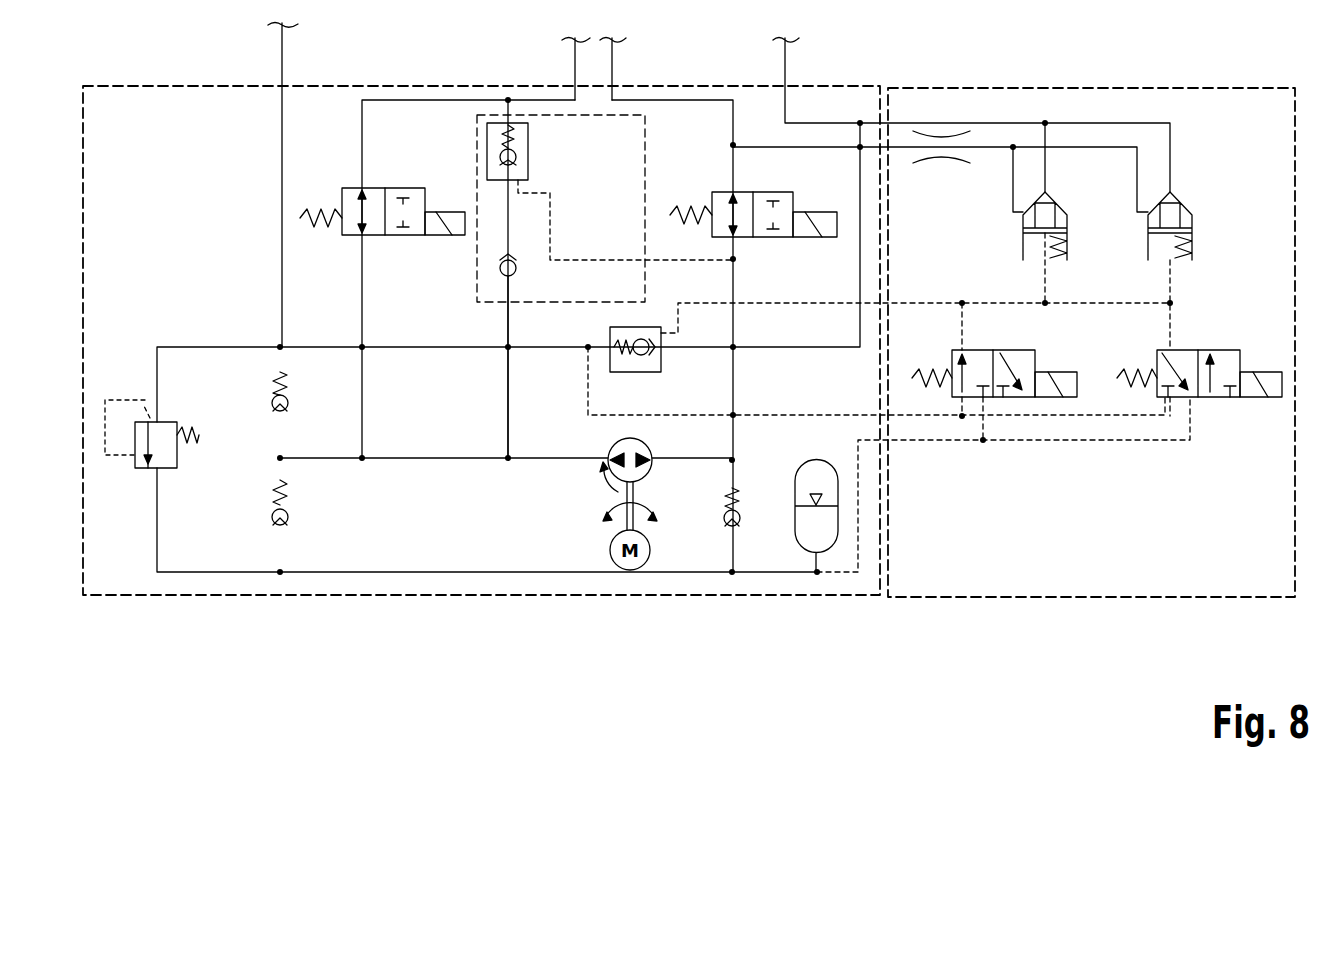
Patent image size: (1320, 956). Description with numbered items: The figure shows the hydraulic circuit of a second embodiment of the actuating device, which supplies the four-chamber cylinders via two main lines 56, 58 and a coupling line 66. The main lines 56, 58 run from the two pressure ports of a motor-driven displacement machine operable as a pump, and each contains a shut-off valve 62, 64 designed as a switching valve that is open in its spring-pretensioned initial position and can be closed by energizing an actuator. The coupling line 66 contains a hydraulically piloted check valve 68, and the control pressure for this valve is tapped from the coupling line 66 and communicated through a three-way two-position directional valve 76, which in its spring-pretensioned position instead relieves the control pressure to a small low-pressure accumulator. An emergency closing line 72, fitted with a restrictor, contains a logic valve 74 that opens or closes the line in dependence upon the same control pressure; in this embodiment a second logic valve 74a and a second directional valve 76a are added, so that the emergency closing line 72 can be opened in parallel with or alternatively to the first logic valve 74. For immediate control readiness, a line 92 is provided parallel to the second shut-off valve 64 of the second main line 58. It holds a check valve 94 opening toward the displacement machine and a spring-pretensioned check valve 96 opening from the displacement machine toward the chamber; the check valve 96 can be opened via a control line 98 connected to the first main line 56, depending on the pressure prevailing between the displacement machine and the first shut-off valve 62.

The first main line 56 is at (612, 58).
The second main line 58 is at (575, 58).
The first shut-off valve 62 is at (706, 192).
The second shut-off valve 64 is at (352, 238).
The coupling line 66 is at (282, 58).
The hydraulically piloted check valve 68 is at (633, 373).
The emergency closing line 72 is at (785, 58).
The logic valve 74 is at (1185, 195).
The second logic valve 74a is at (1059, 194).
The 3/2 directional valve 76 is at (1219, 410).
The second 3/2 directional valve 76a is at (1014, 398).
The line 92 is at (497, 313).
The check valve 94 is at (498, 269).
The spring-pretensioned check valve 96 is at (497, 156).
The control line 98 is at (605, 260).